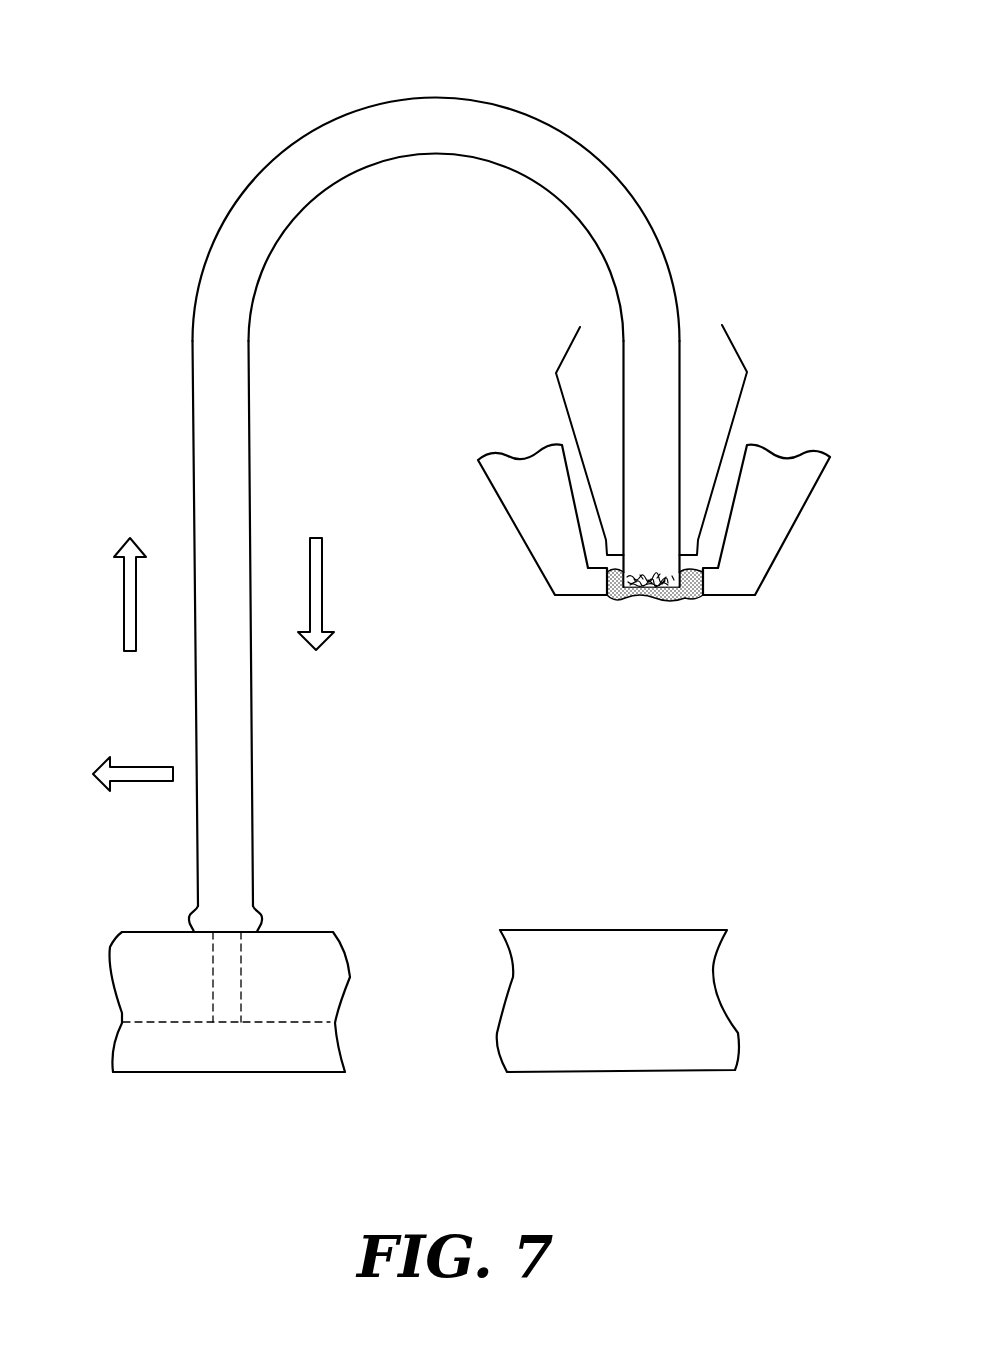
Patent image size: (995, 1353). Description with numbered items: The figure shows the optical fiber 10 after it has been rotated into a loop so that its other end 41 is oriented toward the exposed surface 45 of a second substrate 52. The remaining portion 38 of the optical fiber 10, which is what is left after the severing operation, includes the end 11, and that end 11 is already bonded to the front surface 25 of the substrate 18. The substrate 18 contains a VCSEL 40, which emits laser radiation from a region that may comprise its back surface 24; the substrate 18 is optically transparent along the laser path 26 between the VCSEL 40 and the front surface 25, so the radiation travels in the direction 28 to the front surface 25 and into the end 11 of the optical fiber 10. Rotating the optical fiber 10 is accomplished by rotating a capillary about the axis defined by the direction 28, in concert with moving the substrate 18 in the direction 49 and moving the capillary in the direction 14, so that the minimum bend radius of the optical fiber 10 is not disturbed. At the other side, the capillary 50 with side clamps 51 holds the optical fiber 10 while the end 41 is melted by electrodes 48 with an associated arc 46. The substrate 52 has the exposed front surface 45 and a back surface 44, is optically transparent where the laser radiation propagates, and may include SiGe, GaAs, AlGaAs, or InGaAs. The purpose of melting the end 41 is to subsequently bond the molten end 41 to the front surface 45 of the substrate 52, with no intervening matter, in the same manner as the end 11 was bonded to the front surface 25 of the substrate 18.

The optical fiber 10 is at (433, 80).
The end of the optical fiber 11 is at (195, 920).
The direction 14 is at (320, 593).
The substrate 18 is at (380, 998).
The back surface 24 is at (320, 1073).
The front surface 25 is at (317, 932).
The laser path 26 is at (225, 983).
The direction 28 is at (130, 599).
The remaining portion of the optical fiber 38 is at (243, 386).
The VCSEL 40 is at (277, 1058).
The end of the optical fiber 41 is at (645, 587).
The back surface 44 is at (688, 1072).
The exposed surface 45 is at (682, 930).
The arc 46 is at (690, 597).
The electrodes 48 is at (529, 521).
The direction 49 is at (136, 769).
The capillary 50 is at (694, 410).
The side clamps 51 is at (747, 372).
The substrate 52 is at (599, 1017).